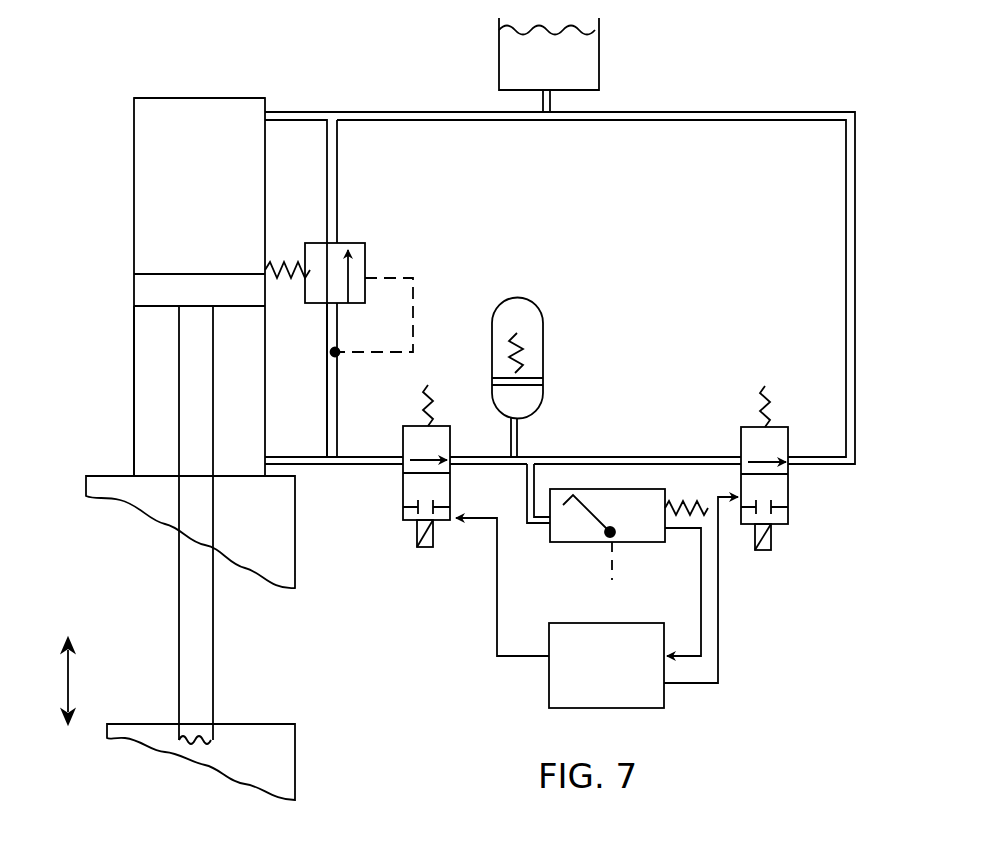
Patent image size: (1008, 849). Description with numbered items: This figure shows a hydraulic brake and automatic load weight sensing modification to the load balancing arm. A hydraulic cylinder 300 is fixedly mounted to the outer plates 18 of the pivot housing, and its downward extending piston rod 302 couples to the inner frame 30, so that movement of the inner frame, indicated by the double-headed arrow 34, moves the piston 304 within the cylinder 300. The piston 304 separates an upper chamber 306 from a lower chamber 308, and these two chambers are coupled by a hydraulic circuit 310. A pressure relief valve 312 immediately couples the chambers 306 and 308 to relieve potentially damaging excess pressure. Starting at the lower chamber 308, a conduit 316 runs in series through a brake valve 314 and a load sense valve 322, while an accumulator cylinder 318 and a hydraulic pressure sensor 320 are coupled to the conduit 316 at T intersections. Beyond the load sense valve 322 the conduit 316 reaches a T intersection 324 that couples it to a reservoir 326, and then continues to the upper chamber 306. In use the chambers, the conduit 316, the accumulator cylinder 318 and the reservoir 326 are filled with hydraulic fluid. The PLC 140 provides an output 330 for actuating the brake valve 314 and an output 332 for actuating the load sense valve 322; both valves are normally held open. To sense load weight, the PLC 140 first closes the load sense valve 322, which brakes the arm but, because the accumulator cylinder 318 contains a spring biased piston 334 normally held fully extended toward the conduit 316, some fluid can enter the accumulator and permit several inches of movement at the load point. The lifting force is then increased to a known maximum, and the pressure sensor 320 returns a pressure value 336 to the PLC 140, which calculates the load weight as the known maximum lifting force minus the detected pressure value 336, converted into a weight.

The outer plates 18 is at (113, 485).
The inner frame 30 is at (163, 735).
The movement of inner frame 34 is at (67, 694).
The PLC 140 is at (588, 689).
The hydraulic cylinder 300 is at (133, 140).
The piston rod 302 is at (201, 672).
The piston 304 is at (150, 295).
The upper chamber 306 is at (148, 223).
The lower chamber 308 is at (150, 396).
The hydraulic circuit 310 is at (452, 108).
The pressure relief valve 312 is at (394, 250).
The brake valve 314 is at (451, 483).
The conduit 316 is at (710, 118).
The accumulator cylinder 318 is at (570, 328).
The hydraulic pressure sensor 320 is at (578, 545).
The load sense valve 322 is at (789, 482).
The T intersection 324 is at (547, 115).
The reservoir 326 is at (590, 66).
The output 330 is at (537, 657).
The output 332 is at (690, 683).
The spring biased piston 334 is at (543, 386).
The pressure value 336 is at (700, 626).